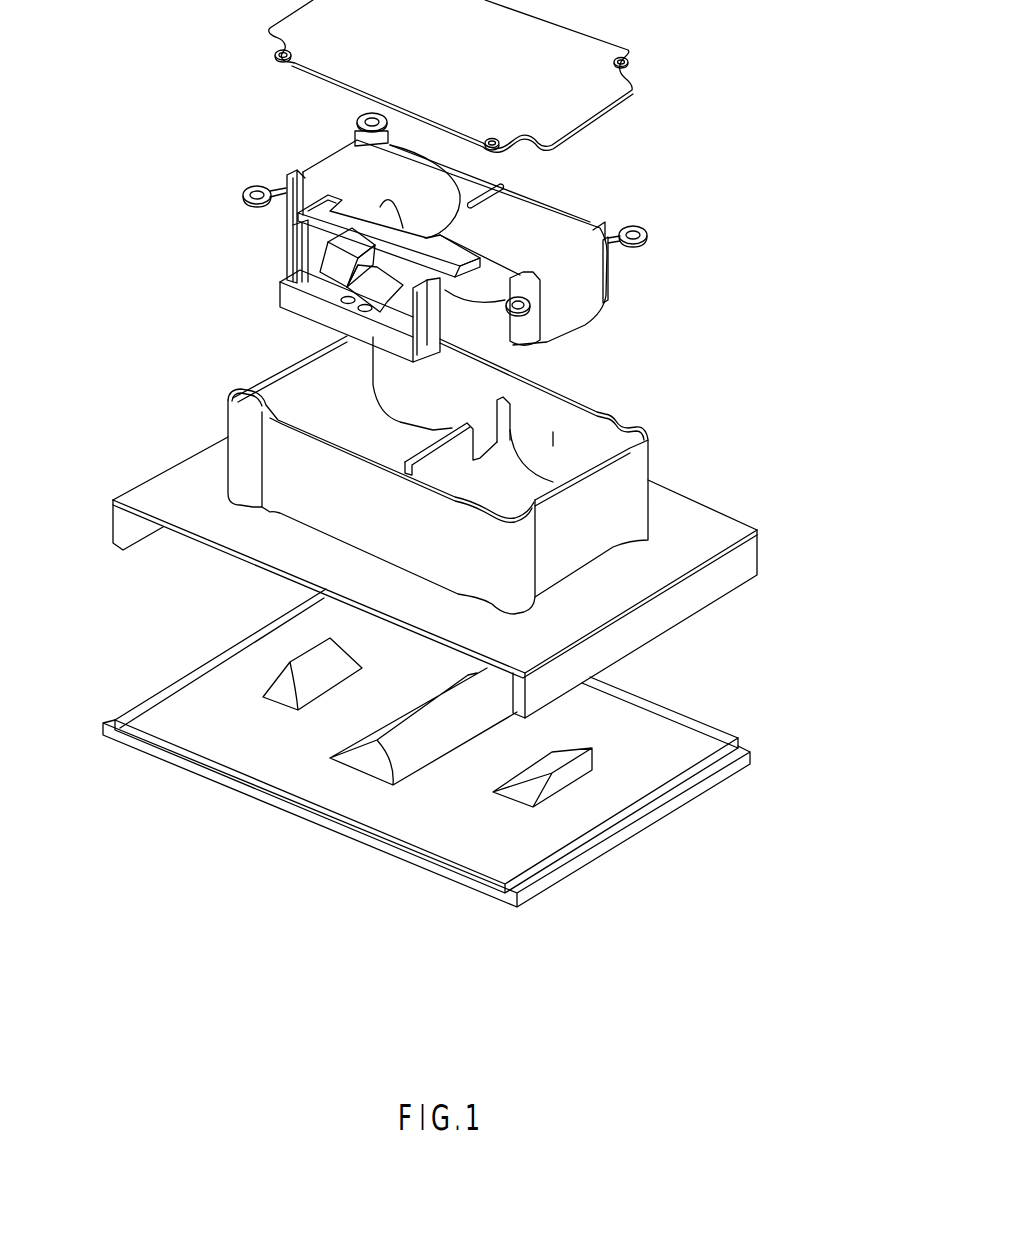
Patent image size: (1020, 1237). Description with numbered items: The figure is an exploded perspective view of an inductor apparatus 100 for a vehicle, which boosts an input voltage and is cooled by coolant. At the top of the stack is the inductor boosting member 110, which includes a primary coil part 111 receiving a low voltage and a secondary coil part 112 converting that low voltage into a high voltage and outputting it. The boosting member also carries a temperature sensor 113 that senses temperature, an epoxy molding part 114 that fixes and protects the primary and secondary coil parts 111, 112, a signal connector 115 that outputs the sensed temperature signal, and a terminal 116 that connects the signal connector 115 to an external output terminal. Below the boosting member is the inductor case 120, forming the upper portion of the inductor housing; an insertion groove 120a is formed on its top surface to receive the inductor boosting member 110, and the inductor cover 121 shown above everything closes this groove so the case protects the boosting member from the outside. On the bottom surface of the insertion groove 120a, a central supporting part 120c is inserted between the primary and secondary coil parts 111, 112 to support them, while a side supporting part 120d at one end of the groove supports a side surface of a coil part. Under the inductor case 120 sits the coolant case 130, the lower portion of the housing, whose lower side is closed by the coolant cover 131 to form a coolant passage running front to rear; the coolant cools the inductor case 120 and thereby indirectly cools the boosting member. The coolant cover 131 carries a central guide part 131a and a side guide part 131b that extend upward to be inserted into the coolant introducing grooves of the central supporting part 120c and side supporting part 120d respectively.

The inductor apparatus 100 is at (731, 102).
The inductor boosting member 110 is at (750, 160).
The primary coil part 111 is at (447, 253).
The secondary coil part 112 is at (578, 260).
The temperature sensor 113 is at (437, 203).
The epoxy molding part 114 is at (648, 237).
The signal connector 115 is at (387, 283).
The terminal 116 is at (417, 330).
The inductor case 120 is at (398, 458).
The insertion groove 120a is at (553, 438).
The central supporting part 120c is at (387, 467).
The side supporting part 120d is at (317, 388).
The inductor cover 121 is at (298, 43).
The coolant case 130 is at (172, 483).
The coolant cover 131 is at (426, 765).
The central guide part 131a is at (362, 763).
The side guide part 131b is at (520, 797).